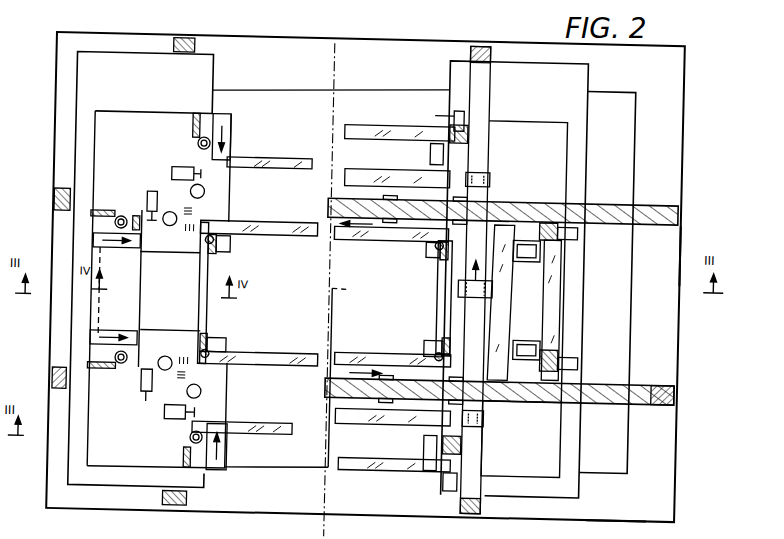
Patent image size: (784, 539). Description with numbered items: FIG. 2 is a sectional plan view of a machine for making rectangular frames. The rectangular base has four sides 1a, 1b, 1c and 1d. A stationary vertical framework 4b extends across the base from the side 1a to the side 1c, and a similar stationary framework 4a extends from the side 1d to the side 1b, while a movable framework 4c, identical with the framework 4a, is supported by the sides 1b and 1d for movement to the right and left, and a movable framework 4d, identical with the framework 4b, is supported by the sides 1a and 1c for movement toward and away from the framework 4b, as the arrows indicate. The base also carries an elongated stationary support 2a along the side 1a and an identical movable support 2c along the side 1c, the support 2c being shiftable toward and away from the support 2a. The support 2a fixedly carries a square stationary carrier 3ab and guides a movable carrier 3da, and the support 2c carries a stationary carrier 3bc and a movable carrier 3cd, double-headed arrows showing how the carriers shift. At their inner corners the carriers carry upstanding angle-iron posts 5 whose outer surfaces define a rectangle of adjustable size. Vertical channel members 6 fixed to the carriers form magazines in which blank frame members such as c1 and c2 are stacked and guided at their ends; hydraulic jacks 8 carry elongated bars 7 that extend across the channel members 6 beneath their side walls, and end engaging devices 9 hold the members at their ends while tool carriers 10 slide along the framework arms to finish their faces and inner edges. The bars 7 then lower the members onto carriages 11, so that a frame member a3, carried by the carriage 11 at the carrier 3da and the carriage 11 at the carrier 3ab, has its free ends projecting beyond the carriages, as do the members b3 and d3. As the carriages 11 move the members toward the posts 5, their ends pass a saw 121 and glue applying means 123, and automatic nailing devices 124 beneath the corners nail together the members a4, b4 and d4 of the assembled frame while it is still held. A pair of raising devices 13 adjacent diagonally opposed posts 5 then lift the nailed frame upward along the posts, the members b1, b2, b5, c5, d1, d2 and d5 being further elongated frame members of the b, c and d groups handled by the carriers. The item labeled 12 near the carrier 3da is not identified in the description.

The base side 1a is at (0, 247).
The base side 1b is at (616, 507).
The base side 1c is at (659, 255).
The base side 1d is at (607, 272).
The elongated stationary support 2a is at (78, 69).
The elongated movable support 2c is at (518, 58).
The movable carrier 3da is at (90, 113).
The stationary carrier 3ab is at (218, 377).
The movable carrier 3cd is at (505, 105).
The stationary carrier 3bc is at (521, 431).
The stationary vertical framework 4a is at (126, 3).
The stationary vertical framework 4b is at (3, 346).
The movable framework 4c is at (518, 284).
The movable framework 4d is at (1, 164).
The upstanding post 5 is at (326, 295).
The magazine channel member 6 is at (138, 90).
The elongated bar 7 is at (512, 304).
The hydraulic jack 8 is at (160, 293).
The end engaging device 9 is at (485, 299).
The tool carrier 10 is at (501, 315).
The carriage 11 is at (170, 99).
The control valve 12 is at (176, 198).
The raising device 13 is at (323, 298).
The saw 121 is at (156, 418).
The glue applying means 123 is at (198, 368).
The automatic nailing device 124 is at (171, 371).
The elongated frame member a3 is at (89, 270).
The elongated frame member a4 is at (211, 293).
The elongated frame member b1 is at (394, 474).
The elongated frame member b2 is at (393, 423).
The elongated frame member b3 is at (242, 437).
The elongated frame member b4 is at (240, 318).
The elongated frame member b5 is at (393, 354).
The elongated frame member c1 is at (558, 310).
The elongated frame member c2 is at (512, 303).
The elongated frame member c5 is at (430, 297).
The elongated frame member d1 is at (400, 124).
The elongated frame member d2 is at (398, 170).
The elongated frame member d3 is at (270, 155).
The elongated frame member d4 is at (259, 241).
The elongated frame member d5 is at (391, 243).